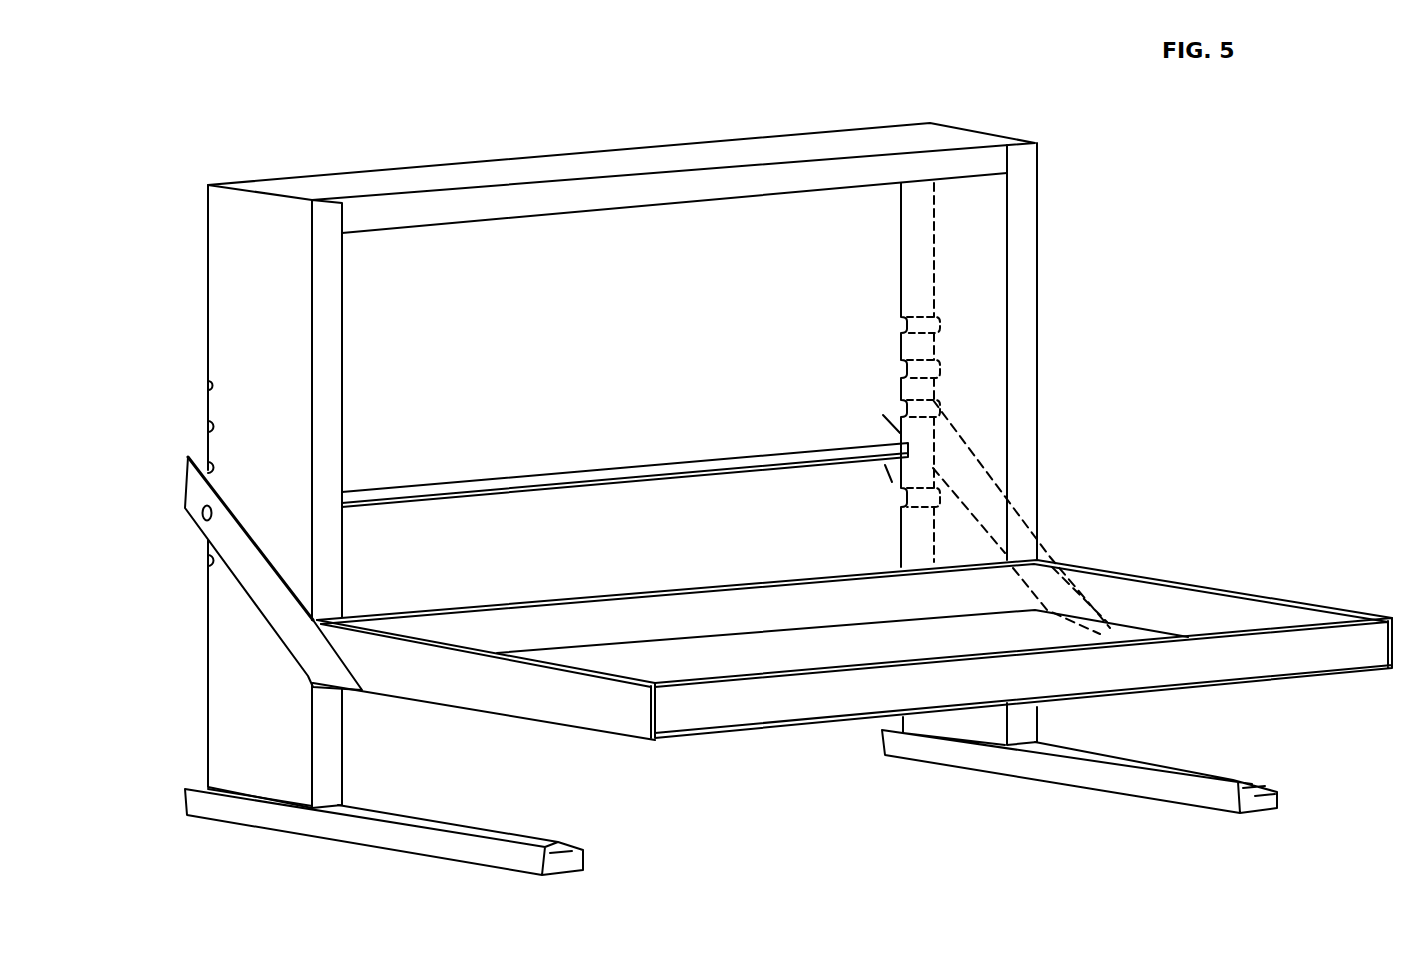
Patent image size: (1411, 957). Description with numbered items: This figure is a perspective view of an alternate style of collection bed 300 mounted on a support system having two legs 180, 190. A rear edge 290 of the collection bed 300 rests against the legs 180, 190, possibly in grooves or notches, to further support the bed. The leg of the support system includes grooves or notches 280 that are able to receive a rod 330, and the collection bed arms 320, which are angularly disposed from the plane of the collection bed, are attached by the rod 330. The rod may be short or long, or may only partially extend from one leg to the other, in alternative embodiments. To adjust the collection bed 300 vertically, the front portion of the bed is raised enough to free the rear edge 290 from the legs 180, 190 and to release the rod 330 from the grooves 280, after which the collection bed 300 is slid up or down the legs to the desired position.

The leg 180 is at (1020, 267).
The leg 190 is at (280, 290).
The grooves or notches 280 is at (207, 387).
The rear edge 290 is at (685, 603).
The collection bed 300 is at (773, 712).
The collection bed arms 320 is at (253, 577).
The rod 330 is at (722, 463).